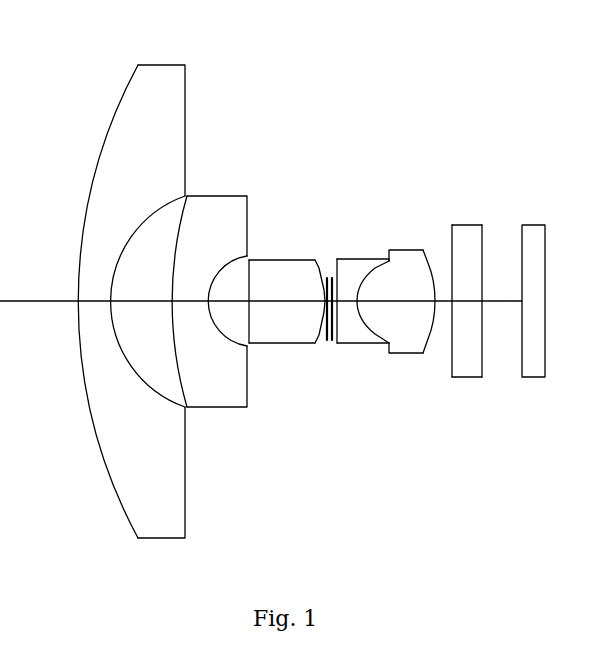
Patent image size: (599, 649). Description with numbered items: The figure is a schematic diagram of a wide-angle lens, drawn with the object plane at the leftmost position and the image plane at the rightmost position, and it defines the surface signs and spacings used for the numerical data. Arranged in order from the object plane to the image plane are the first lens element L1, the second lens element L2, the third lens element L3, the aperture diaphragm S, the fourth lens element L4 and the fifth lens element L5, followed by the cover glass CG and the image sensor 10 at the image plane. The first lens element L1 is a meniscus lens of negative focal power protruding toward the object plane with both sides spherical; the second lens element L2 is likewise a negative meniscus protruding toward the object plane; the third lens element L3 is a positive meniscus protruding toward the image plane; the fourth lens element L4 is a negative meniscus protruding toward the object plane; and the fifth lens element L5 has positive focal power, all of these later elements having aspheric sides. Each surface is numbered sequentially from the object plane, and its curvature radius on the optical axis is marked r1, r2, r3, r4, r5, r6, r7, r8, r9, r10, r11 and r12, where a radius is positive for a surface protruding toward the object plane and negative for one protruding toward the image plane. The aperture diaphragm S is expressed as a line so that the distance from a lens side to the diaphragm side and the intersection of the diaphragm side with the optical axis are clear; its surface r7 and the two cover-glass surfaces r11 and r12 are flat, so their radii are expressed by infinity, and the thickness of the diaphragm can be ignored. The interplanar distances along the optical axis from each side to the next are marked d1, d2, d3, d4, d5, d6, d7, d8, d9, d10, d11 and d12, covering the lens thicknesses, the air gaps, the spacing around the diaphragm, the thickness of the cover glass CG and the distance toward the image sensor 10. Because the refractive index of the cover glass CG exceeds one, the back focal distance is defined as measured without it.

The first lens element L1 is at (115, 277).
The second lens element L2 is at (206, 277).
The third lens element L3 is at (287, 264).
The fourth lens element L4 is at (363, 264).
The fifth lens element L5 is at (413, 269).
The aperture diaphragm S is at (324, 252).
The cover glass CG is at (477, 276).
The image sensor 10 is at (532, 225).
The curvature radius of Side 1 r1 is at (77, 265).
The curvature radius of Side 2 r2 is at (112, 296).
The curvature radius of Side 3 r3 is at (172, 261).
The curvature radius of Side 4 r4 is at (202, 298).
The curvature radius of Side 5 r5 is at (249, 290).
The curvature radius of Side 6 r6 is at (318, 292).
The surface of the diaphragm r7 is at (327, 290).
The curvature radius of Side 8 r8 is at (337, 279).
The curvature radius of Side 9 r9 is at (386, 266).
The curvature radius of Side 10 r10 is at (431, 268).
The first surface of the cover glass r11 is at (452, 256).
The second surface of the cover glass r12 is at (499, 301).
The interplanar distance from Side 1 to Side 2 d1 is at (90, 305).
The interplanar distance from Side 2 to Side 3 d2 is at (147, 305).
The interplanar distance from Side 3 to Side 4 d3 is at (190, 305).
The interplanar distance from Side 4 to Side 5 d4 is at (223, 305).
The interplanar distance from Side 5 to Side 6 d5 is at (277, 303).
The interplanar distance from Side 6 to Side 7 d6 is at (322, 305).
The interplanar distance from Side 7 to Side 8 d7 is at (329, 305).
The interplanar distance from Side 8 to Side 9 d8 is at (345, 308).
The interplanar distance from Side 9 to Side 10 d9 is at (403, 305).
The interplanar distance from Side 10 to Side 11 d10 is at (445, 305).
The interplanar distance from Side 11 to Side 12 d11 is at (467, 305).
The interplanar distance from Side 12 to Side 13 d12 is at (503, 305).